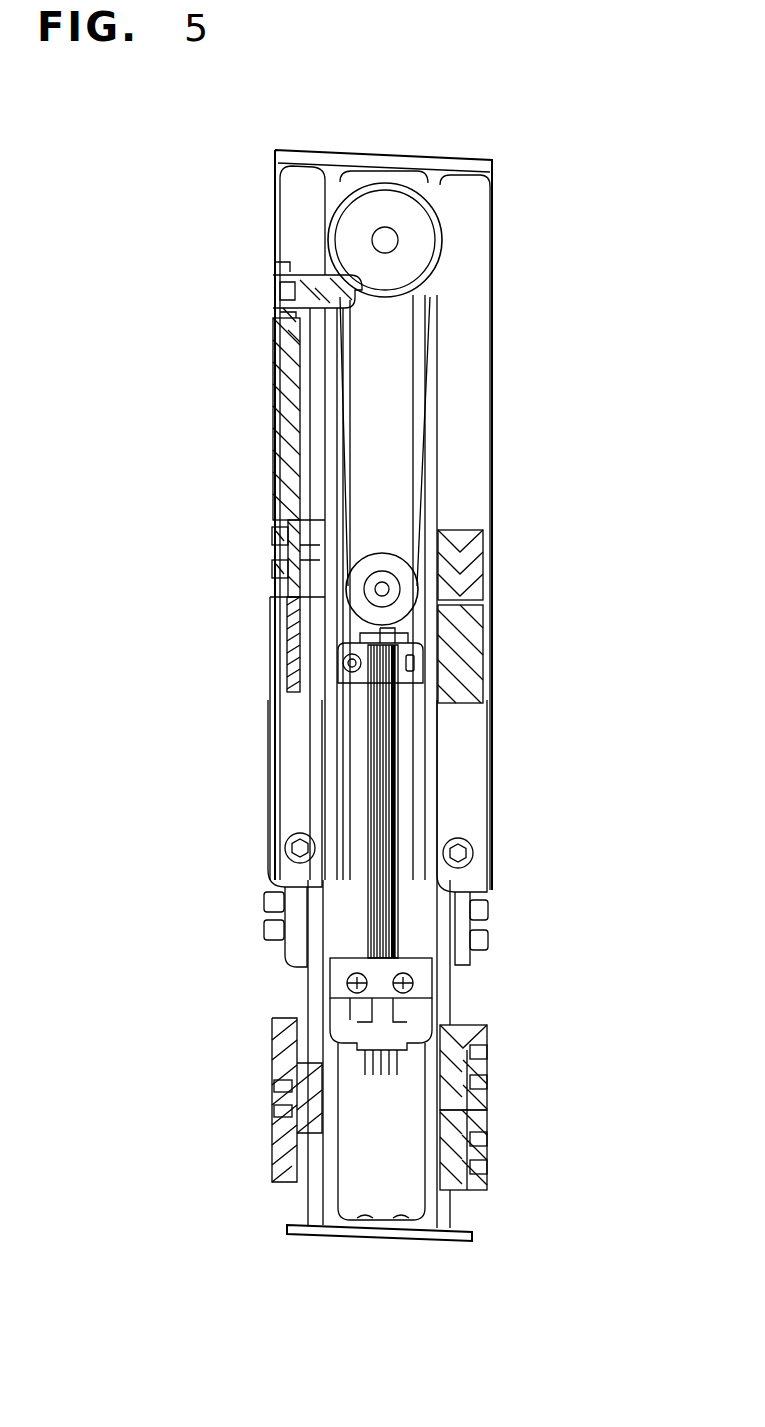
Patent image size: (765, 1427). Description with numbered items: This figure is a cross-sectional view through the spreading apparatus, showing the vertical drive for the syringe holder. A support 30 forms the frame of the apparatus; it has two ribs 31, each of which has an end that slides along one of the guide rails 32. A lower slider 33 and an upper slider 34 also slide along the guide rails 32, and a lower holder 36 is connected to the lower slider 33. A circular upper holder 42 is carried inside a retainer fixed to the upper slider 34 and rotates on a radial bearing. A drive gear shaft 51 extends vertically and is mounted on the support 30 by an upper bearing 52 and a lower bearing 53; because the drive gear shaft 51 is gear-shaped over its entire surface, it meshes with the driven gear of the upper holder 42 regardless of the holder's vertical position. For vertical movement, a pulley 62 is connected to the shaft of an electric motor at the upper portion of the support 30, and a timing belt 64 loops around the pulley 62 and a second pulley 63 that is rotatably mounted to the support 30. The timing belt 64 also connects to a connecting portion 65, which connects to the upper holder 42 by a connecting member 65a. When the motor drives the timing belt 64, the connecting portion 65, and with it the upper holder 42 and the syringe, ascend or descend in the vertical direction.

The support 30 is at (467, 346).
The rib 31 is at (330, 377).
The guide rail 32 is at (315, 749).
The lower slider 33 is at (278, 1124).
The upper slider 34 is at (305, 554).
The lower holder 36 is at (278, 1047).
The upper holder 42 is at (467, 655).
The drive gear shaft 51 is at (378, 806).
The upper bearing 52 is at (403, 636).
The lower bearing 53 is at (417, 973).
The pulley 62 is at (413, 233).
The second pulley 63 is at (385, 558).
The timing belt 64 is at (415, 462).
The connecting portion 65 is at (300, 272).
The connecting member 65a is at (290, 446).